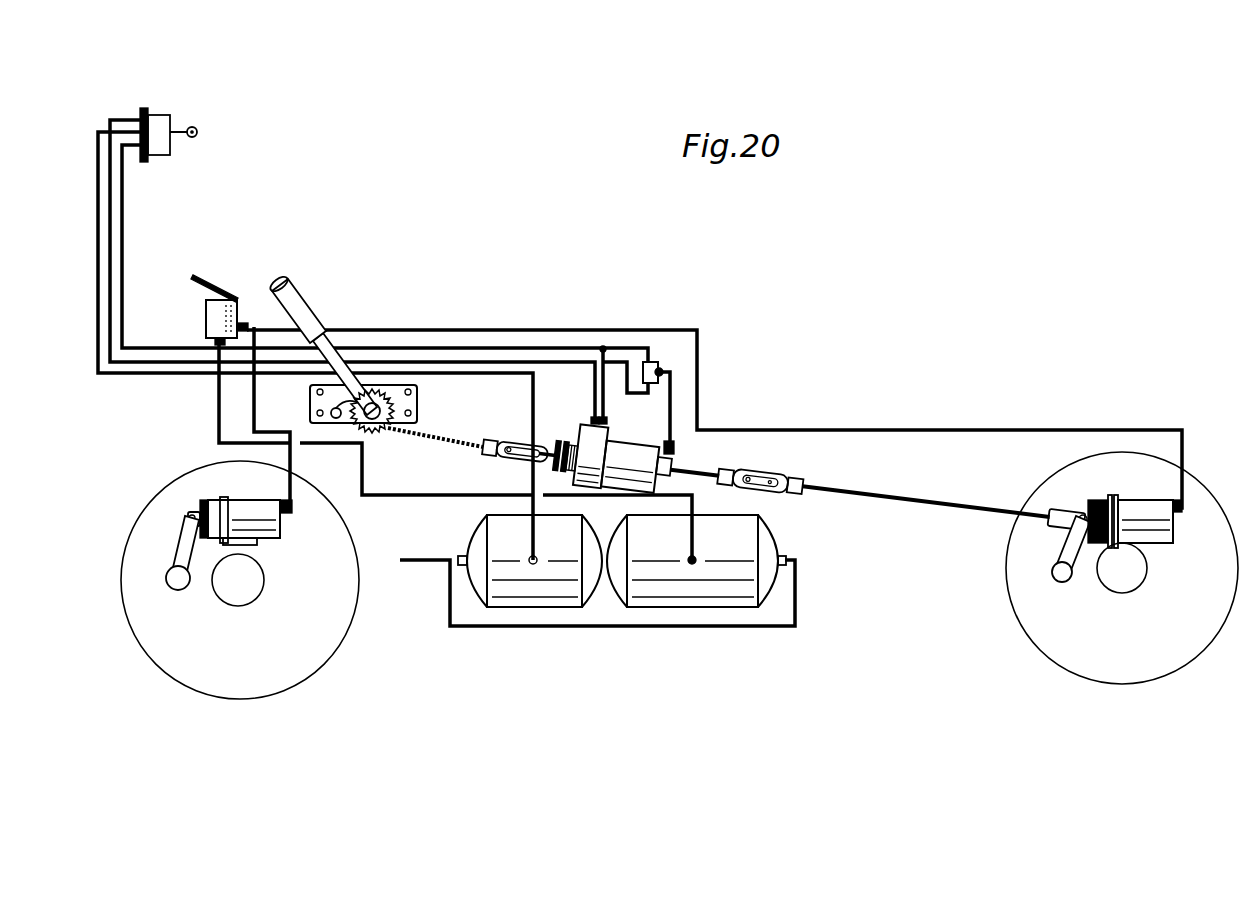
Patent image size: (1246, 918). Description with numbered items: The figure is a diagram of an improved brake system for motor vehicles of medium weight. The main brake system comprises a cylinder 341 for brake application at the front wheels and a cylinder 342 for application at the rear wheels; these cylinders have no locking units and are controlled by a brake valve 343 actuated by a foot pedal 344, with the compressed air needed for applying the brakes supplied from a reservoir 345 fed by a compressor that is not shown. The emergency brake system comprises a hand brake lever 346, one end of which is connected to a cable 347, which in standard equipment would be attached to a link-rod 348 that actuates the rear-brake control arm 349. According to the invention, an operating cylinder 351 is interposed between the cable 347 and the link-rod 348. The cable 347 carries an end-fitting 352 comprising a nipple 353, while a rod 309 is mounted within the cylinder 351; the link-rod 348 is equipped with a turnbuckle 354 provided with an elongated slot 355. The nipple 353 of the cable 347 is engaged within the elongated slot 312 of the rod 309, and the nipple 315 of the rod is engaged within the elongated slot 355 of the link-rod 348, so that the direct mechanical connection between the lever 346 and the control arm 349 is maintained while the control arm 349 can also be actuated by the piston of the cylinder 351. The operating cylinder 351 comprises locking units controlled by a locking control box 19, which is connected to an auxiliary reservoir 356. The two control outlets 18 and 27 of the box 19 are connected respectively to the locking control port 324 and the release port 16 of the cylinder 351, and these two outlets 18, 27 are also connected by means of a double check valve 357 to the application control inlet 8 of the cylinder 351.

The control outlet 27 is at (147, 120).
The locking control box 19 is at (160, 124).
The control outlet 18 is at (130, 152).
The foot pedal 344 is at (213, 282).
The brake valve 343 is at (206, 316).
The hand brake lever 346 is at (320, 313).
The double check valve 357 is at (660, 363).
The locking control port 324 is at (593, 418).
The end-fitting 352 is at (489, 438).
The elongated slot 312 is at (545, 440).
The release port 16 is at (605, 422).
The operating cylinder 351 is at (633, 455).
The application control inlet 8 is at (674, 444).
The rod 309 is at (699, 468).
The nipple 315 is at (744, 470).
The elongated slot 355 is at (766, 475).
The turnbuckle 354 is at (797, 478).
The link-rod 348 is at (912, 505).
The rear-brake control arm 349 is at (1067, 547).
The cylinder 342 is at (1145, 510).
The cylinder 341 is at (247, 520).
The reservoir 345 is at (776, 532).
The auxiliary reservoir 356 is at (538, 598).
The cable 347 is at (416, 440).
The nipple 353 is at (506, 458).